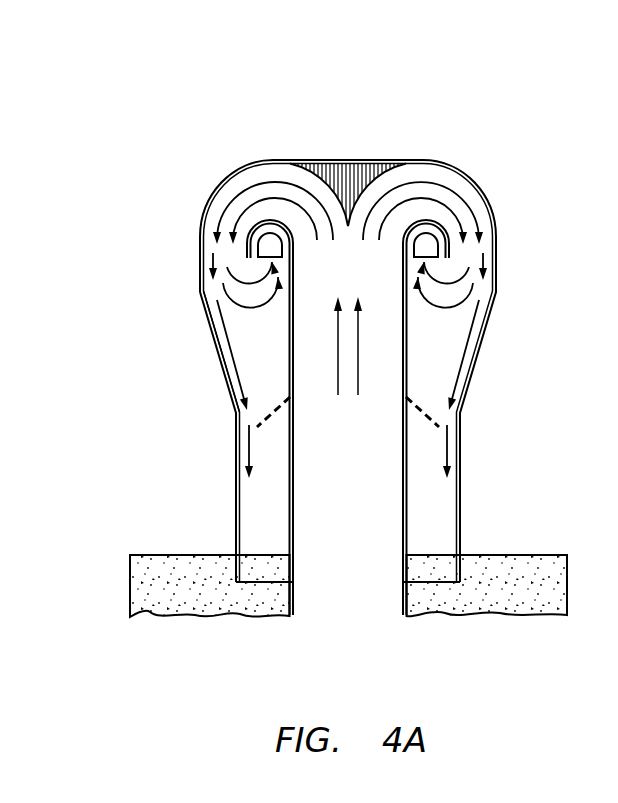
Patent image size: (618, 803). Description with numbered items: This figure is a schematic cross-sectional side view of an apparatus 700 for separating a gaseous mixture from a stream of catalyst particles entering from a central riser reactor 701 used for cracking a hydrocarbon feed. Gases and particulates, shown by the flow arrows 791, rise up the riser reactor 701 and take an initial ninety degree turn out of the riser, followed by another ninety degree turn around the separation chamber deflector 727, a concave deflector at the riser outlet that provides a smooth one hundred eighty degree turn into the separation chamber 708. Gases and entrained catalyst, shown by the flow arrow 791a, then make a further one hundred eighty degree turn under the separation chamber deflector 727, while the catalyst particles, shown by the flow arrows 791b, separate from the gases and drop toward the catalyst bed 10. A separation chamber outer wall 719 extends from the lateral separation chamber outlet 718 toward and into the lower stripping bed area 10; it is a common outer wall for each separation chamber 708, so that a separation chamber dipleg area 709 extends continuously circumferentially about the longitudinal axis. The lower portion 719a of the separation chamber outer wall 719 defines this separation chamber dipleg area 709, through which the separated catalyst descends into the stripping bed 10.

The apparatus 700 is at (145, 138).
The riser reactor 701 is at (293, 316).
The separation chamber deflector 727 is at (263, 222).
The lateral separation chamber outlet 718 is at (436, 226).
The flow arrows 791 is at (272, 182).
The flow arrow 791a is at (266, 298).
The flow arrows 791b is at (465, 358).
The separation chamber outer wall 719 is at (218, 355).
The separation chamber 708 is at (253, 358).
The lower portion of separation chamber outer wall 719a is at (233, 467).
The separation chamber dipleg area 709 is at (433, 527).
The lower stripping bed area 10 is at (567, 577).